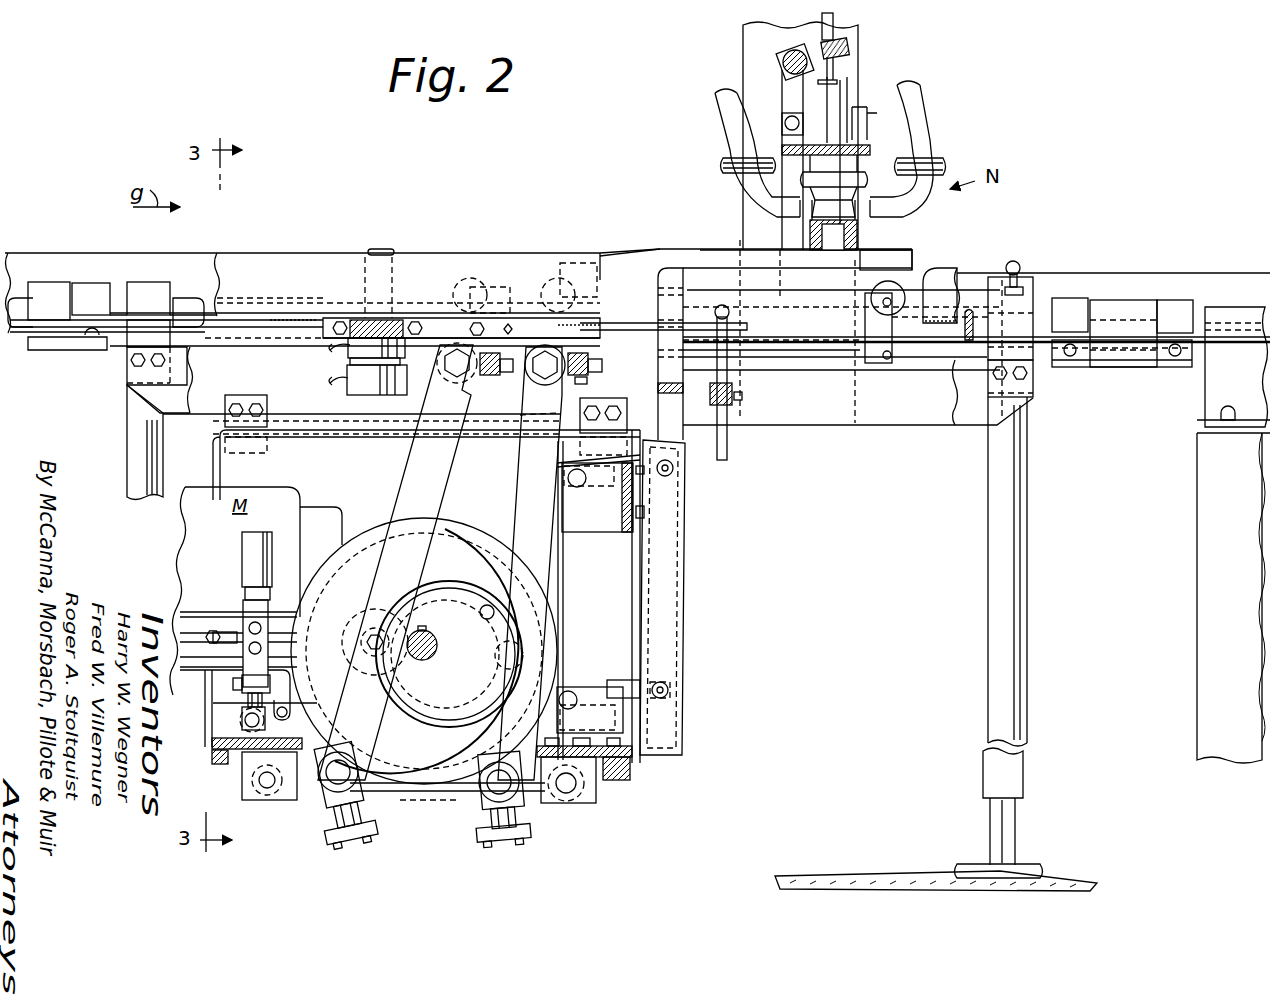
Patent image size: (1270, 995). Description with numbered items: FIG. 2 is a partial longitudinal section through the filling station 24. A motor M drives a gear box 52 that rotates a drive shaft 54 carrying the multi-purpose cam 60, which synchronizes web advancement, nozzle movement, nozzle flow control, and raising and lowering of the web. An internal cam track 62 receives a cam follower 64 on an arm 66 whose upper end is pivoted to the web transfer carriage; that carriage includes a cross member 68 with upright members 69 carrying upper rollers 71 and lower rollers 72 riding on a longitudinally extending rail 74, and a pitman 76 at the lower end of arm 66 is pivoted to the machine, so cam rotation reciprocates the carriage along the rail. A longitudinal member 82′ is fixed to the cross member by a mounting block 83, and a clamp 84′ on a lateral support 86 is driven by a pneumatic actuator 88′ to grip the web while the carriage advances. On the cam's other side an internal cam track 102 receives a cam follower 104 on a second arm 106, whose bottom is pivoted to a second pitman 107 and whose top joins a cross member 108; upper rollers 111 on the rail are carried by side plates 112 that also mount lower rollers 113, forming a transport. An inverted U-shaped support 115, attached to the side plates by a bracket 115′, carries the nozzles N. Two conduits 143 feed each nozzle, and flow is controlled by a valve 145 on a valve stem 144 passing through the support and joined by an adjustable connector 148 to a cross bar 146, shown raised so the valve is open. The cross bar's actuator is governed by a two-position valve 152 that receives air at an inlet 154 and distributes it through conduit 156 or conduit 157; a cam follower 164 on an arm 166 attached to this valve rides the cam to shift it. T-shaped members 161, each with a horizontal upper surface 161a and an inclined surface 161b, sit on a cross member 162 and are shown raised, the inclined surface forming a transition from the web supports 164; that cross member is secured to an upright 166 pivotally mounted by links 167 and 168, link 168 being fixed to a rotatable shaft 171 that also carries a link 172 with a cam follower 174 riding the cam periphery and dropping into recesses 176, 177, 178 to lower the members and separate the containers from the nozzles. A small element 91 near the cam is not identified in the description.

The filling station 24 is at (600, 196).
The gear box 52 is at (335, 533).
The drive shaft 54 is at (440, 645).
The multi-purpose cam 60 is at (556, 602).
The internal cam track 62 is at (397, 730).
The cam follower 64 is at (352, 661).
The arm 66 is at (418, 460).
The cross member 68 is at (497, 380).
The upright members 69 is at (497, 290).
The upper rollers 71 is at (470, 278).
The lower rollers 72 is at (447, 348).
The rail 74 is at (186, 298).
The pitman 76 is at (422, 795).
The longitudinal member 82′ is at (433, 323).
The mounting block 83 is at (466, 330).
The clamp 84′ is at (381, 250).
The lateral support 86 is at (368, 322).
The actuator 88′ is at (355, 393).
The pin 91 is at (479, 612).
The internal cam track 102 is at (348, 622).
The cam follower 104 is at (493, 681).
The second arm 106 is at (520, 486).
The second pitman 107 is at (381, 795).
The cross member 108 is at (590, 378).
The upper rollers 111 is at (557, 278).
The side plates 112 is at (863, 353).
The lower rollers 113 is at (567, 350).
The inverted U-shaped support 115 is at (880, 230).
The bracket 115′ is at (802, 290).
The conduits 143 is at (728, 112).
The valve stem 144 is at (845, 90).
The valve 145 is at (815, 228).
The cross bar 146 is at (850, 48).
The adjustable connector 148 is at (817, 67).
The two-position valve 152 is at (250, 610).
The inlet 154 is at (213, 632).
The conduit 156 is at (250, 632).
The conduit 157 is at (252, 652).
The T-shaped member 161 is at (683, 368).
The horizontal upper surface 161a is at (903, 246).
The inclined surface 161b is at (640, 256).
The cross member 162 is at (675, 395).
The web supports 164 is at (56, 268).
The upright 166 is at (688, 525).
The link 167 is at (672, 478).
The link 168 is at (668, 700).
The rotatable shaft 171 is at (572, 692).
The link 172 is at (566, 712).
The cam follower 174 is at (532, 747).
The recess 176 is at (292, 680).
The recess 177 is at (462, 525).
The recess 178 is at (455, 791).